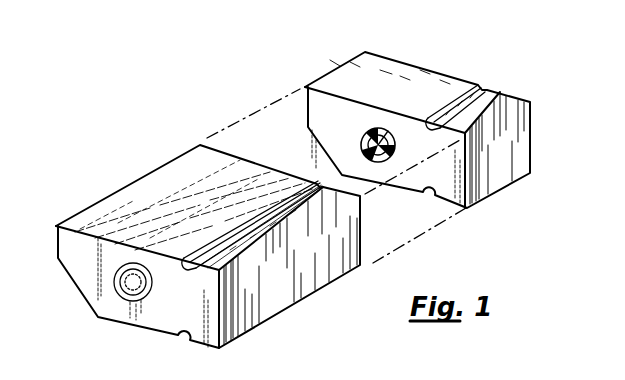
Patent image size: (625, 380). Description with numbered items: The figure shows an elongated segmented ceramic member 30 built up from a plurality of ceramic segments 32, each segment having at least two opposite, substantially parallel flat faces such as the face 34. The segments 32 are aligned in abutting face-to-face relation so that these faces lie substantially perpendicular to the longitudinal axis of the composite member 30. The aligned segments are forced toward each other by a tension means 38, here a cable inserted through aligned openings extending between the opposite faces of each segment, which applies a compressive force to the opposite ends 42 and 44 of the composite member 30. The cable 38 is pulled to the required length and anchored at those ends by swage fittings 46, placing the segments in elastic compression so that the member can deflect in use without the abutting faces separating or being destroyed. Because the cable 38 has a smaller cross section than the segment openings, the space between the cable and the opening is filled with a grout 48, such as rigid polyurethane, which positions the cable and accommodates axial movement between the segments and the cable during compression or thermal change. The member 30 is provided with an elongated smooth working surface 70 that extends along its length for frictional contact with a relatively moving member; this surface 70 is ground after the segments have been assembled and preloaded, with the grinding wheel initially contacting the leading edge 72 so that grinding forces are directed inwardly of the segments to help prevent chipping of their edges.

The elongated segmented ceramic member 30 is at (140, 160).
The ceramic segments 32 is at (257, 320).
The flat face 34 is at (313, 102).
The tension means (cable) 38 is at (366, 140).
The end of the composite 42 is at (83, 246).
The end of the composite 44 is at (456, 73).
The swage fittings 46 is at (126, 298).
The grout 48 is at (393, 141).
The working surface 70 is at (195, 158).
The leading edge 72 is at (113, 190).